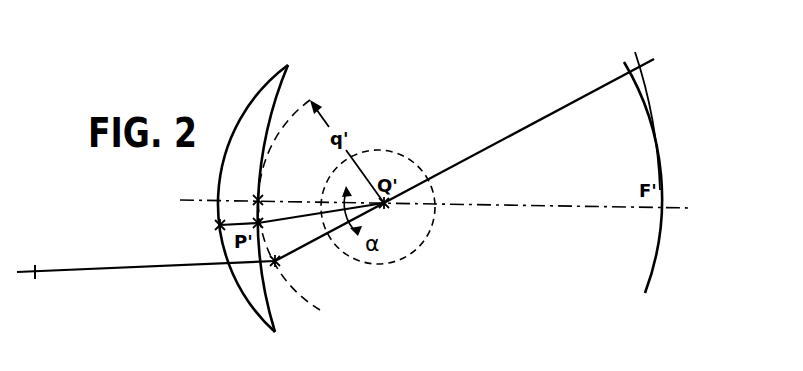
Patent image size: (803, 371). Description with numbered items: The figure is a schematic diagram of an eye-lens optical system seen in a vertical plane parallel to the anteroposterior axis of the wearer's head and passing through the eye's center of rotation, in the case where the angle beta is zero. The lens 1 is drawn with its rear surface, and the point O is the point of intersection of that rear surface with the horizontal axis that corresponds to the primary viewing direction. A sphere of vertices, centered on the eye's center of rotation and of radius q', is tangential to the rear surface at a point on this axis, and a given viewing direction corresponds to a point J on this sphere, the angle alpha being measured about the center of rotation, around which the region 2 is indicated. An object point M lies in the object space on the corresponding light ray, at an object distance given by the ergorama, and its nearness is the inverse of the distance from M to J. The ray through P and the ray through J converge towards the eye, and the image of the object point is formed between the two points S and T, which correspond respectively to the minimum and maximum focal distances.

The lens 1 is at (232, 295).
The image region around focal point Q' 2 is at (434, 240).
The point S is at (643, 164).
The object point M is at (146, 284).
The point T is at (464, 157).
The ray through P is at (287, 219).
The point O is at (249, 191).
The point J is at (281, 267).